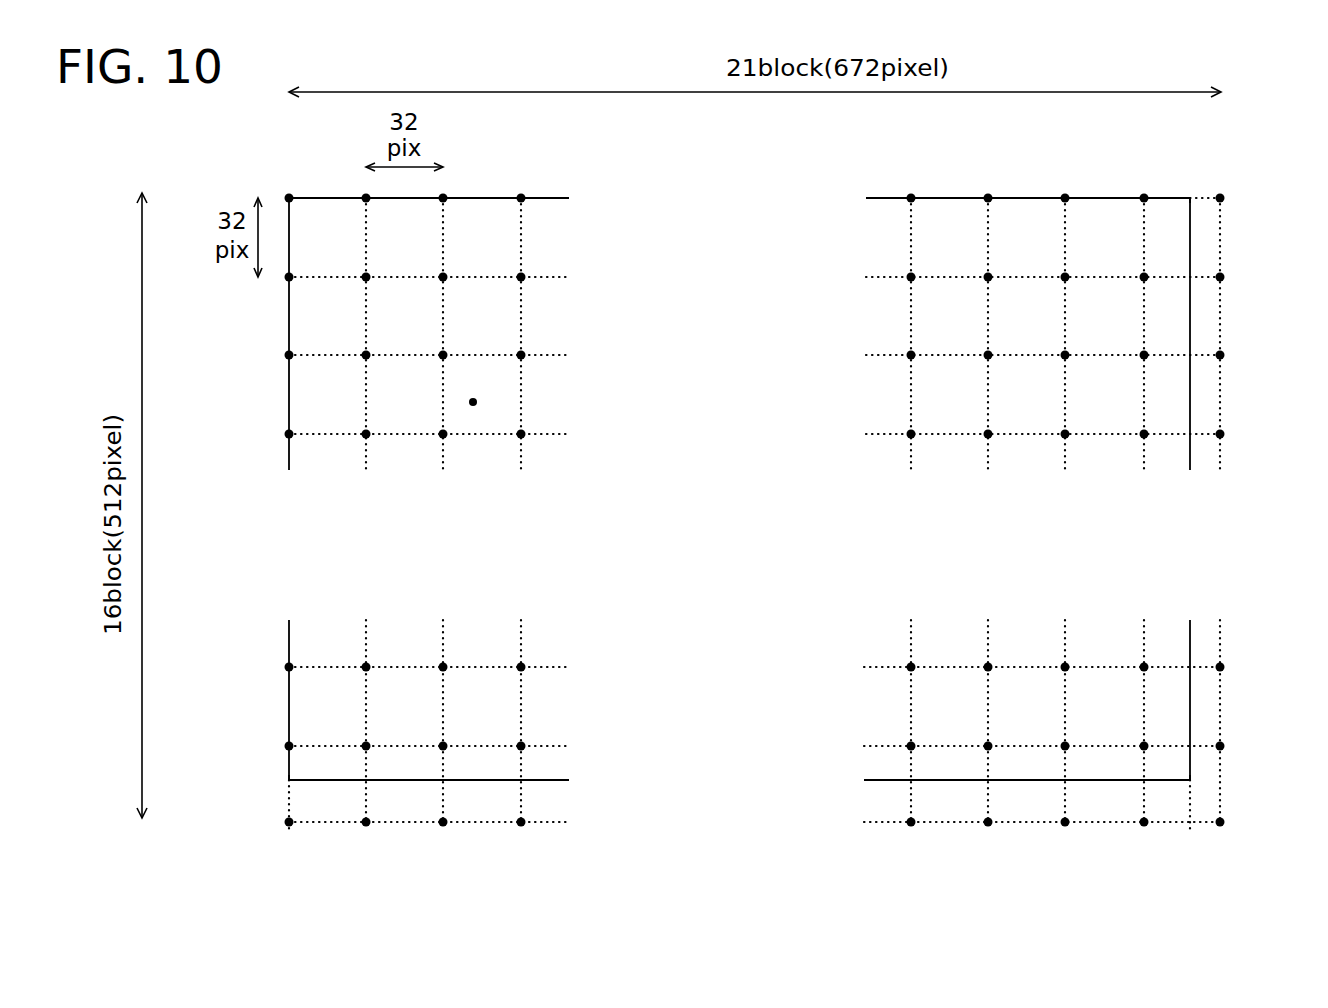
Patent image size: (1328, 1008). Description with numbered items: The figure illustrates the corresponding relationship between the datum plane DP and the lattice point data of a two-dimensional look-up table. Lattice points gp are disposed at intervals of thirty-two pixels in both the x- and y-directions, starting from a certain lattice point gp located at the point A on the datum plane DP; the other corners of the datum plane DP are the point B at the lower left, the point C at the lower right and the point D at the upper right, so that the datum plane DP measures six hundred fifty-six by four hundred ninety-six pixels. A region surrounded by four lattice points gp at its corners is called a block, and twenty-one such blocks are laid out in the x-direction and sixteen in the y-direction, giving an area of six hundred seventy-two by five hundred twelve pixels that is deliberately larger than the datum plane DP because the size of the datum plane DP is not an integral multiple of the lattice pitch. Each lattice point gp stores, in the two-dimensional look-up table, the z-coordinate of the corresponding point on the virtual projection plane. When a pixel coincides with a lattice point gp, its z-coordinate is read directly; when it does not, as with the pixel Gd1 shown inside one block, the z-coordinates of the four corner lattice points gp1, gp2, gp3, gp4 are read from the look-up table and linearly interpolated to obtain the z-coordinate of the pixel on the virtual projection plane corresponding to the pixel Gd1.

The point A (0, 0, 0) A is at (288, 197).
The point B (0, 495, 0) B is at (288, 780).
The point C (655, 495, 0) C is at (1189, 780).
The point D (655, 0, 0) D is at (1189, 198).
The datum plane DP is at (1189, 322).
The lattice point gp is at (910, 355).
The lattice point gp1 is at (466, 340).
The lattice point gp2 is at (466, 448).
The lattice point gp3 is at (544, 448).
The lattice point gp4 is at (544, 340).
The pixel Gd1 is at (472, 402).
The element block is at (1021, 216).